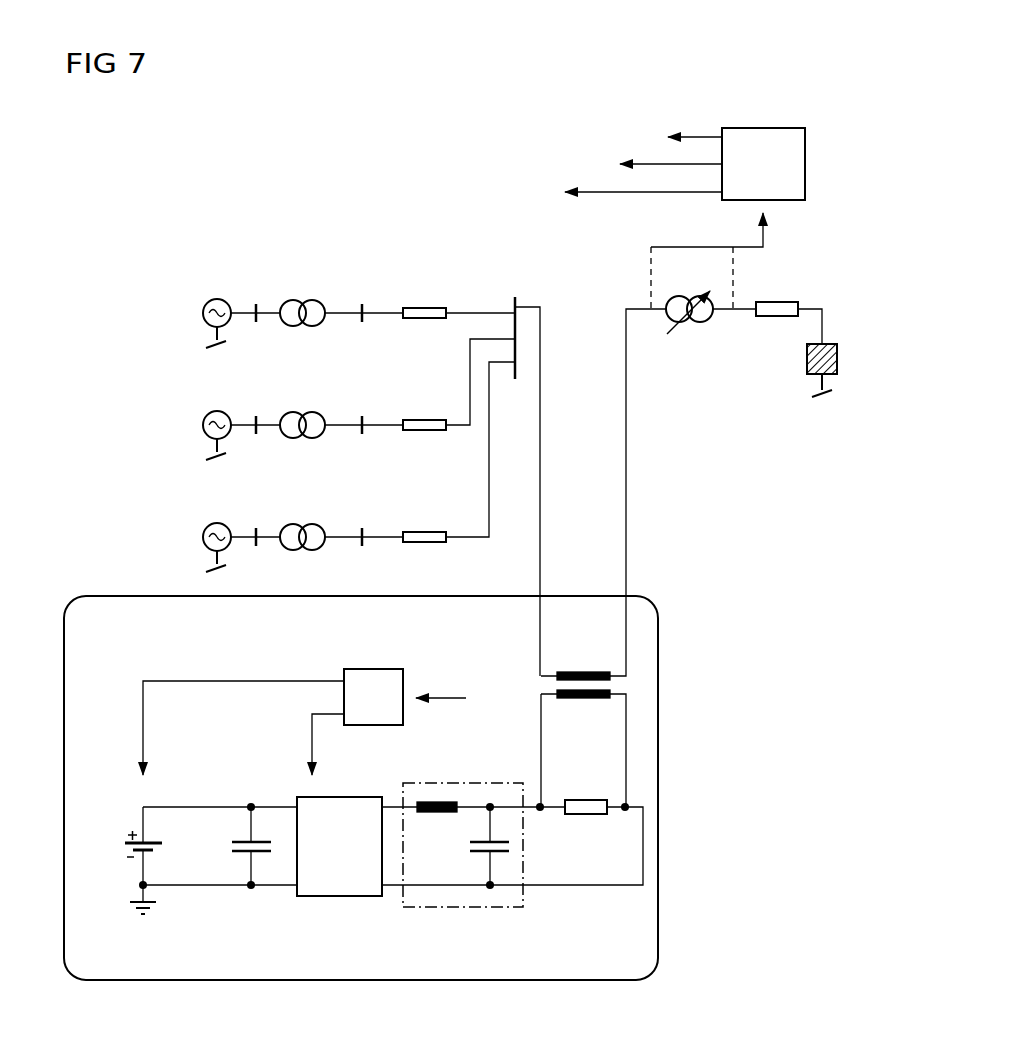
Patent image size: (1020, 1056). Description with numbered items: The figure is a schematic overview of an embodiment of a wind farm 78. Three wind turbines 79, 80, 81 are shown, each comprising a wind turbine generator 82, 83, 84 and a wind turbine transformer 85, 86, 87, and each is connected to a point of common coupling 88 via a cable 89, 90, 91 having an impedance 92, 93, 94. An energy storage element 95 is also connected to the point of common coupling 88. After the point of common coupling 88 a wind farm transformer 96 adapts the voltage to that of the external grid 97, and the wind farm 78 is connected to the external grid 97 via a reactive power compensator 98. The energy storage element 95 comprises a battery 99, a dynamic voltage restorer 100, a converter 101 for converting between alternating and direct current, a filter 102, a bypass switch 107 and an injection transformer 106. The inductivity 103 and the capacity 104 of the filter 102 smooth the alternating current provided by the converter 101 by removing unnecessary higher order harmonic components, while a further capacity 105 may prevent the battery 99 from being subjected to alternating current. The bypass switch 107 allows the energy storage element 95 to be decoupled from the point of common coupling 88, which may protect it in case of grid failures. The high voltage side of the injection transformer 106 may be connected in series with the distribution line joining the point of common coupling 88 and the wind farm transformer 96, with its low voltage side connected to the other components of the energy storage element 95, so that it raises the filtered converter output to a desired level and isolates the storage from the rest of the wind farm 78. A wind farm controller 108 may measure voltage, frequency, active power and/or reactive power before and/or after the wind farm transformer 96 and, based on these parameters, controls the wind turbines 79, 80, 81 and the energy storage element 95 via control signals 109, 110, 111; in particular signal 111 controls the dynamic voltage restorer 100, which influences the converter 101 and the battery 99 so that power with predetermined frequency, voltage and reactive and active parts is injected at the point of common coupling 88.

The wind farm 78 is at (820, 108).
The wind turbine 79 is at (188, 307).
The wind turbine 80 is at (188, 419).
The wind turbine 81 is at (188, 531).
The wind turbine generator 82 is at (217, 298).
The wind turbine generator 83 is at (217, 410).
The wind turbine generator 84 is at (217, 522).
The wind turbine transformer 85 is at (303, 298).
The wind turbine transformer 86 is at (303, 410).
The wind turbine transformer 87 is at (303, 522).
The point of common coupling 88 is at (514, 297).
The cable 89 is at (362, 300).
The cable 90 is at (362, 412).
The cable 91 is at (362, 524).
The impedance 92 is at (426, 304).
The impedance 93 is at (426, 416).
The impedance 94 is at (426, 528).
The energy storage element 95 is at (660, 790).
The wind farm transformer 96 is at (690, 325).
The external grid 97 is at (838, 358).
The reactive power compensator 98 is at (776, 302).
The battery 99 is at (124, 847).
The dynamic voltage restorer 100 is at (375, 668).
The converter 101 is at (340, 897).
The filter 102 is at (452, 908).
The inductivity 103 is at (437, 801).
The capacity 104 is at (470, 848).
The capacity 105 is at (232, 848).
The injection transformer 106 is at (590, 671).
The bypass switch 107 is at (588, 800).
The wind farm controller 108 is at (806, 165).
The control signal 109 is at (695, 134).
The control signal 110 is at (642, 161).
The control signal 111 is at (585, 189).